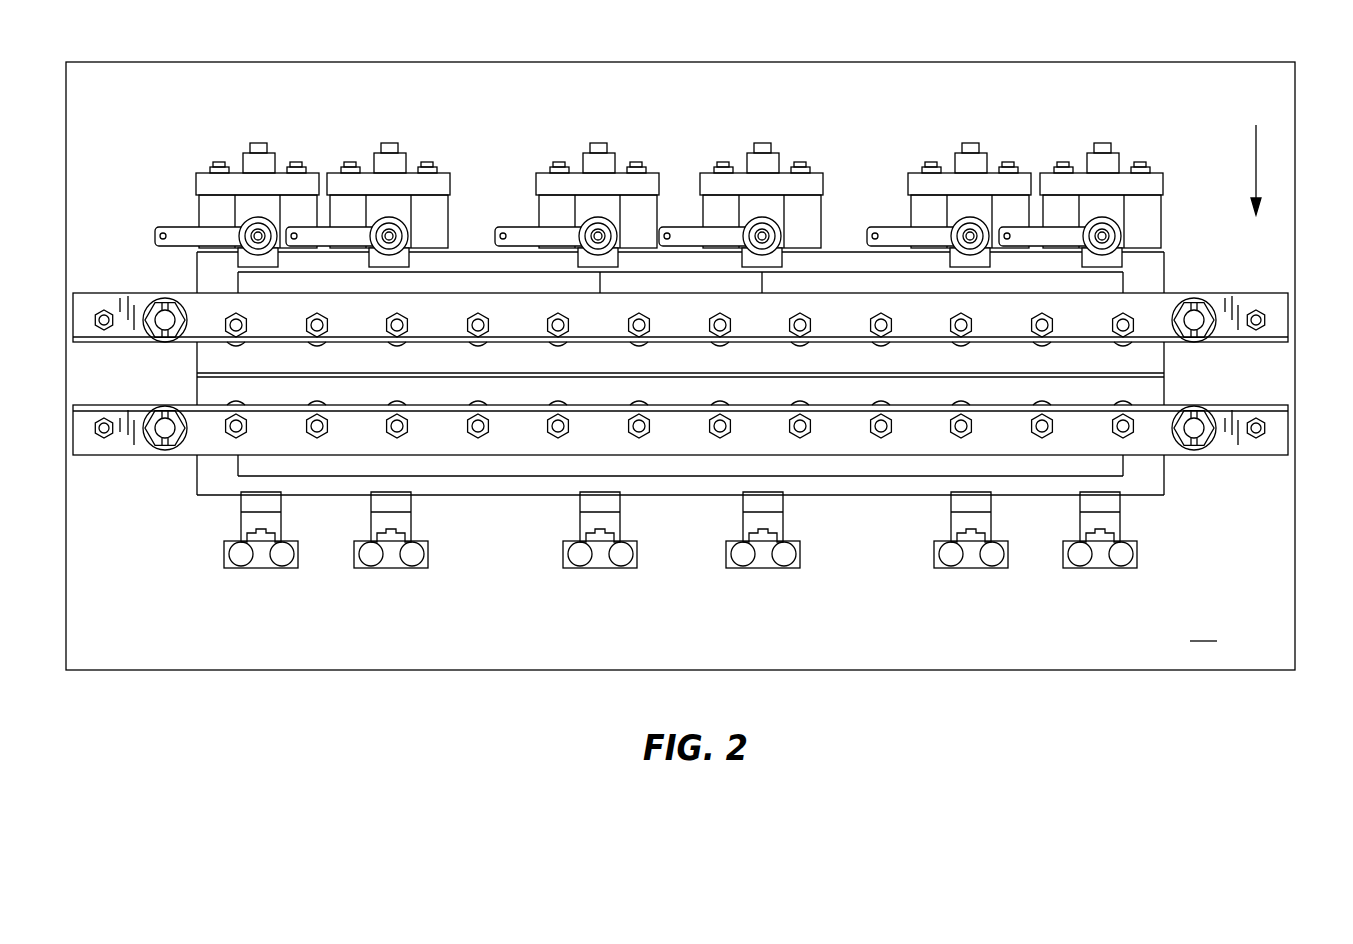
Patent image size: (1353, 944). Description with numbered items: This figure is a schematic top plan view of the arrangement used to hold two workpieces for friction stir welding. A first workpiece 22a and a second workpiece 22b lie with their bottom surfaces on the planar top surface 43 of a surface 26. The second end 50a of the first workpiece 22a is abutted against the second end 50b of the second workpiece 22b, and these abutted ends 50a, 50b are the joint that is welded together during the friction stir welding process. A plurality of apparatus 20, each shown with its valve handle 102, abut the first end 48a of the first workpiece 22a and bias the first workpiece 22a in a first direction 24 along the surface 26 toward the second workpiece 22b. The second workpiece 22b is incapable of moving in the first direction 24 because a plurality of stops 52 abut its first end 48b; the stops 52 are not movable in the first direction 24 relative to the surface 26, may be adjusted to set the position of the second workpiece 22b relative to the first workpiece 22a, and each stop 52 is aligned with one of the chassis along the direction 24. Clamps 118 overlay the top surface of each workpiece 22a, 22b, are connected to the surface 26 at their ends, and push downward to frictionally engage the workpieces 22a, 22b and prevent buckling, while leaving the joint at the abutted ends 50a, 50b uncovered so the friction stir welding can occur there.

The apparatus 20 is at (198, 145).
The valve with handle 102 is at (247, 220).
The second end of the first workpiece 50a is at (832, 373).
The second end of the second workpiece 50b is at (850, 377).
The first end of the first workpiece 48a is at (852, 253).
The first end of the second workpiece 48b is at (906, 497).
The first direction 24 is at (1255, 163).
The first workpiece 22a is at (1148, 273).
The second workpiece 22b is at (1145, 390).
The clamp 118 is at (1257, 300).
The stop 52 is at (264, 568).
The surface 26 is at (1256, 603).
The planar top surface 43 is at (1203, 630).